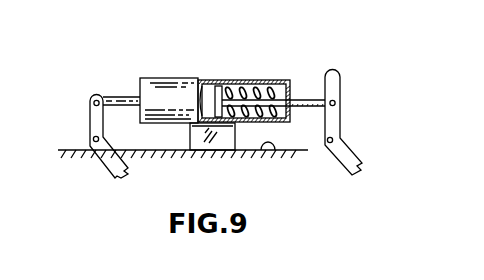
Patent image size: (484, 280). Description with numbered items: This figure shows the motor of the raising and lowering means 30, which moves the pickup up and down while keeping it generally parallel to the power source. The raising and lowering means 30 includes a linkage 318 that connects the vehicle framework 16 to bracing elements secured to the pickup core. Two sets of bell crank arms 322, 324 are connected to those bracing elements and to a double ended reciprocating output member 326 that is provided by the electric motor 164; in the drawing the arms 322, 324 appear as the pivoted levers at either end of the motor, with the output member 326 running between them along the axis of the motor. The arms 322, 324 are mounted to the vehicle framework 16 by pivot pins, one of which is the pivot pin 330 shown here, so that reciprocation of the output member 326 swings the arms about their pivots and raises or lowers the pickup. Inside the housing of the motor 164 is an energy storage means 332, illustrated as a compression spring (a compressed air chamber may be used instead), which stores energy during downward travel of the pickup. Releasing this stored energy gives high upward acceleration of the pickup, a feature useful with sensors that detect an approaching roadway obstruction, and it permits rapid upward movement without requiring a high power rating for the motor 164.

The framework 16 is at (272, 152).
The raising and lowering means 30 is at (89, 120).
The bell crank arm 324 is at (114, 163).
The electric motor 164 is at (258, 78).
The energy storage means 332 is at (240, 84).
The pivot pin 330 is at (301, 95).
The linkage 318 is at (352, 141).
The bell crank arm 322 is at (356, 158).
The double ended reciprocating output member 326 is at (336, 137).